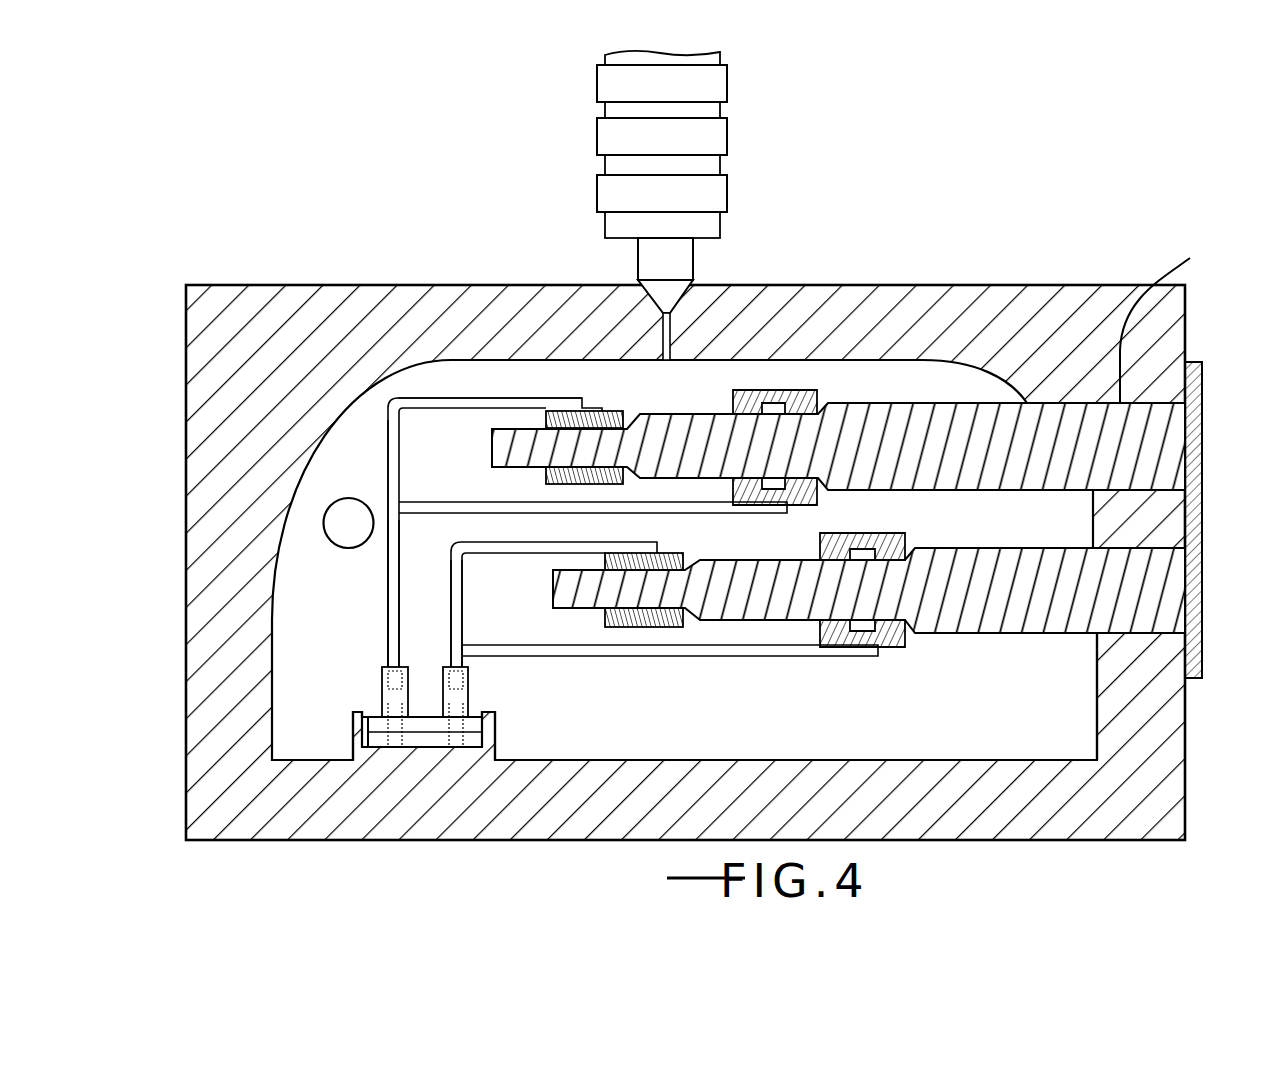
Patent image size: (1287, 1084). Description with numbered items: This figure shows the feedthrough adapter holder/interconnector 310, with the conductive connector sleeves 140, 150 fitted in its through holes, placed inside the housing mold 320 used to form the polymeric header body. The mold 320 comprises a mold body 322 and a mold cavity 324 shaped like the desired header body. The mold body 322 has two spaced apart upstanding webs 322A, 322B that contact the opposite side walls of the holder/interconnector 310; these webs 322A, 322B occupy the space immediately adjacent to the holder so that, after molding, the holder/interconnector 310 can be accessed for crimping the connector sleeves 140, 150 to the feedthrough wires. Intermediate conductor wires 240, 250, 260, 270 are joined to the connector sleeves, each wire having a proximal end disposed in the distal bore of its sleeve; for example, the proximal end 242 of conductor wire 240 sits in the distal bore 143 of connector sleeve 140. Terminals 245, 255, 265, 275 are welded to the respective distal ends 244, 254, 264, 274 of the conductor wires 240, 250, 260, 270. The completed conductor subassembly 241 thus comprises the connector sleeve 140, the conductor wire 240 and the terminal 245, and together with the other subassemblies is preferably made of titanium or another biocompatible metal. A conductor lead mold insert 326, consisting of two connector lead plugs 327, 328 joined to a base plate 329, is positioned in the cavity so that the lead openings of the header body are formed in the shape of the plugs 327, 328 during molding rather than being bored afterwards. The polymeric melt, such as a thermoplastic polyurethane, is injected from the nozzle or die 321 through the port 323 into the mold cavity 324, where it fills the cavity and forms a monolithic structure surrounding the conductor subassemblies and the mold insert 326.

The connector sleeve 140 is at (382, 697).
The distal bore 143 is at (395, 677).
The connector sleeve 150 is at (470, 693).
The conductor wire 240 is at (388, 468).
The conductor subassembly 241 is at (368, 428).
The proximal end 242 is at (398, 676).
The distal end 244 is at (582, 396).
The terminal 245 is at (612, 411).
The conductor wire 250 is at (507, 556).
The distal end 254 is at (623, 547).
The terminal 255 is at (665, 556).
The conductor wire 260 is at (433, 513).
The distal end 264 is at (767, 518).
The terminal 265 is at (797, 389).
The conductor wire 270 is at (735, 657).
The distal end 274 is at (862, 658).
The terminal 275 is at (847, 534).
The feedthrough adapter holder/interconnector 310 is at (427, 747).
The mold 320 is at (995, 268).
The nozzle or die 321 is at (730, 138).
The mold body 322 is at (1076, 302).
The upstanding web 322A is at (517, 747).
The upstanding web 322B is at (367, 717).
The port 323 is at (677, 338).
The mold cavity 324 is at (1070, 733).
The conductor lead mold insert 326 is at (1208, 555).
The connector lead plug 327 is at (1177, 319).
The connector lead plug 328 is at (1050, 635).
The base plate 329 is at (1205, 412).